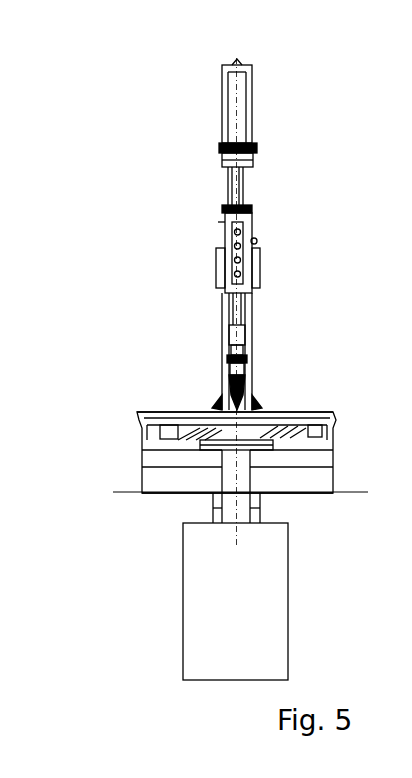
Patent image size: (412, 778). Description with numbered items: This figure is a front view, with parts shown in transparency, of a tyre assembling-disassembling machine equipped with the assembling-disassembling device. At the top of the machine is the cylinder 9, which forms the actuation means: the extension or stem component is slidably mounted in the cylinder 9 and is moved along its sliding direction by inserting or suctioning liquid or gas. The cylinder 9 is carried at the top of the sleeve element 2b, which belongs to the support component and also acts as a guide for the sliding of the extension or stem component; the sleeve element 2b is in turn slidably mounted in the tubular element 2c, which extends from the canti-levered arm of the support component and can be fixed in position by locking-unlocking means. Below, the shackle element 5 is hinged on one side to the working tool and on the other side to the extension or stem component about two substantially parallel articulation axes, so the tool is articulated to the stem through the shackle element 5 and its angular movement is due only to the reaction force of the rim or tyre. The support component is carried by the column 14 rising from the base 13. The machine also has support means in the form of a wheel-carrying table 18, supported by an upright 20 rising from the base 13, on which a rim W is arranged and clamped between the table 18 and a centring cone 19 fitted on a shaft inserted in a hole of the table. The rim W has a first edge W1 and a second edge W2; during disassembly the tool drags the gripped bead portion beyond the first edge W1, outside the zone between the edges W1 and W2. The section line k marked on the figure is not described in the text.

The cylinder 9 is at (252, 112).
The sleeve element 2b is at (243, 195).
The tubular element 2c is at (225, 238).
The column 14 is at (222, 322).
The shackle element 5 is at (245, 350).
The centring cone 19 is at (222, 405).
The rim W is at (333, 412).
The first edge of the rim W1 is at (142, 413).
The second edge of the rim W2 is at (141, 497).
The wheel-carrying table 18 is at (210, 448).
The section line k is at (236, 490).
The upright 20 is at (213, 510).
The base 13 is at (288, 578).